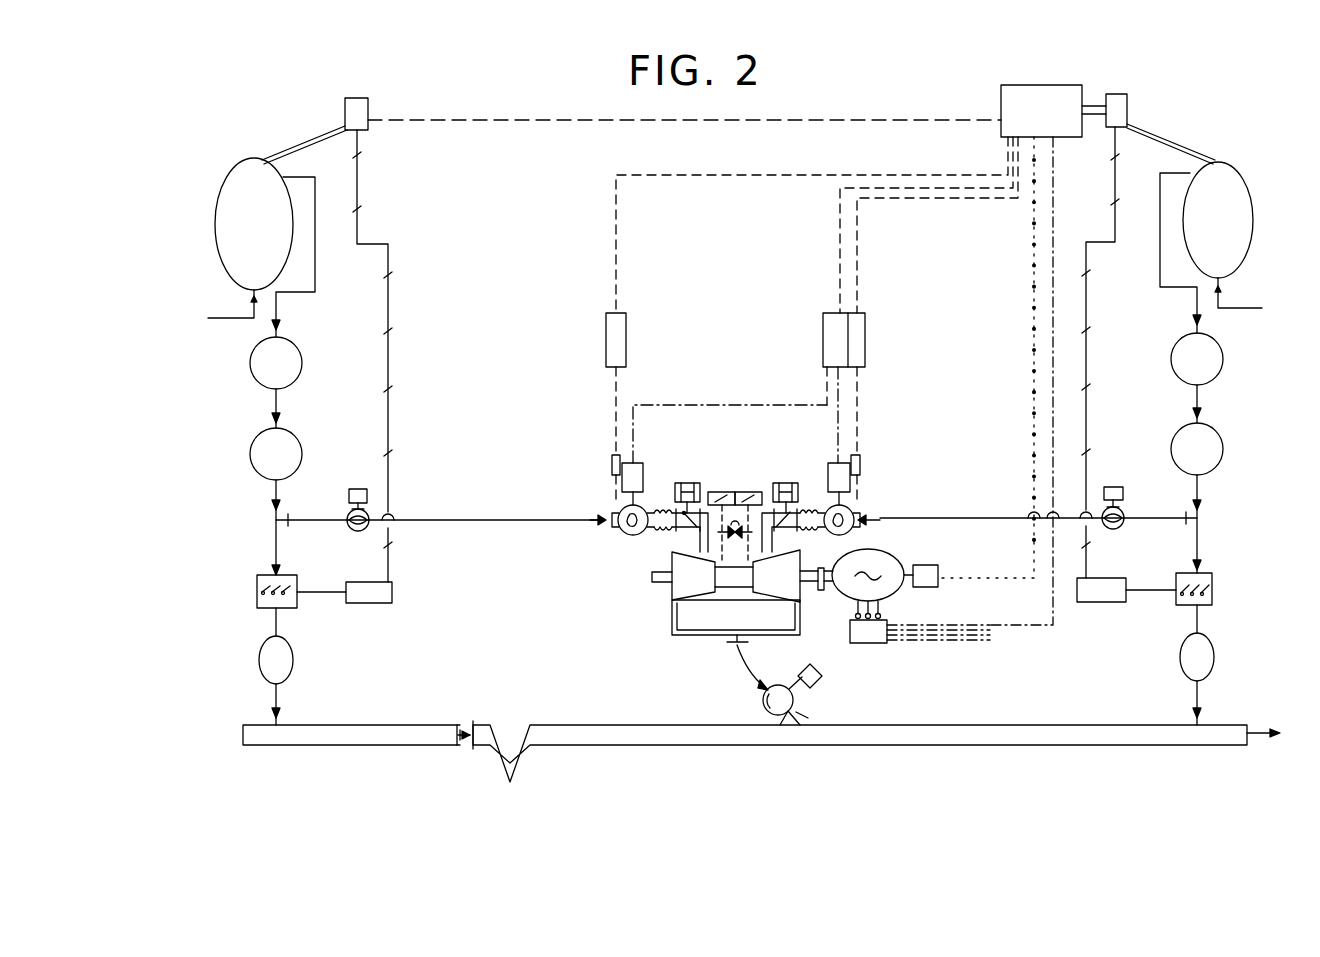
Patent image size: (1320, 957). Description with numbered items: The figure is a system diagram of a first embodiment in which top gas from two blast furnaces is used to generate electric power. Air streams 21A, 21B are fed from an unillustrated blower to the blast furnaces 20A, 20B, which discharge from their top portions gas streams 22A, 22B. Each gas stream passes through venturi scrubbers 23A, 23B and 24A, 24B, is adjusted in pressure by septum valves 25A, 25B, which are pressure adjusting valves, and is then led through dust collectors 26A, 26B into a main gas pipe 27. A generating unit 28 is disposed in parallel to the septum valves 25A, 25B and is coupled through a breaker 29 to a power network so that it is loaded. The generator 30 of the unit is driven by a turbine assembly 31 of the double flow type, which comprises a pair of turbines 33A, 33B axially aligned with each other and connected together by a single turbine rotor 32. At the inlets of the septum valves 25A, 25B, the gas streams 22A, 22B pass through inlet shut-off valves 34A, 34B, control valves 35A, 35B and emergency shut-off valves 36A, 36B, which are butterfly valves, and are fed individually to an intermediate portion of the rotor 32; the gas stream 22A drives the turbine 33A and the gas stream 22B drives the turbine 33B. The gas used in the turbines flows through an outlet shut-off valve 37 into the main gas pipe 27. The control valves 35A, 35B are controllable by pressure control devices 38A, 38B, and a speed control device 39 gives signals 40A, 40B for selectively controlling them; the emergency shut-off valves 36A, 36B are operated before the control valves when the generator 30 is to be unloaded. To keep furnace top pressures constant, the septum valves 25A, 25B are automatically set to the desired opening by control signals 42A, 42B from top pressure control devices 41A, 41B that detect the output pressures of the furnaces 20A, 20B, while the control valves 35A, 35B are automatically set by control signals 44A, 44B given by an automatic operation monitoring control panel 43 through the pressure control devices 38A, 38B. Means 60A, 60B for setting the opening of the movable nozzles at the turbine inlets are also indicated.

The blast furnace 20A is at (254, 224).
The blast furnace 20B is at (1218, 220).
The air stream 21A is at (213, 311).
The air stream 21B is at (1246, 293).
The gas stream 22A is at (303, 292).
The gas stream 22B is at (1160, 289).
The venturi scrubber 23A is at (282, 374).
The venturi scrubber 23B is at (1203, 370).
The venturi scrubber 24A is at (282, 465).
The venturi scrubber 24B is at (1203, 460).
The septum valve 25A is at (302, 588).
The septum valve 25B is at (1174, 584).
The dust collector 26A is at (286, 671).
The dust collector 26B is at (1207, 668).
The main gas pipe 27 is at (664, 745).
The generating unit 28 is at (902, 560).
The breaker 29 is at (868, 643).
The generator 30 is at (890, 590).
The turbine assembly 31 is at (698, 614).
The turbine rotor 32 is at (820, 592).
The turbine 33A is at (703, 588).
The turbine 33B is at (784, 588).
The inlet shut-off valve 34A is at (350, 509).
The inlet shut-off valve 34B is at (1122, 505).
The control valve 35A is at (616, 510).
The control valve 35B is at (856, 510).
The emergency shut-off valve 36A is at (682, 503).
The emergency shut-off valve 36B is at (790, 511).
The outlet shut-off valve 37 is at (796, 700).
The pressure control device 38A is at (622, 340).
The pressure control device 38B is at (865, 342).
The speed control device 39 is at (823, 338).
The signal 40A is at (720, 404).
The signal 40B is at (838, 423).
The top pressure control device 41A is at (368, 128).
The top pressure control device 41B is at (1127, 100).
The control signal 42A is at (388, 336).
The control signal 42B is at (1087, 360).
The automatic operation monitoring control panel 43 is at (1052, 122).
The control signal 44A is at (616, 402).
The control signal 44B is at (858, 412).
The nozzle opening setting means 60A is at (718, 490).
The nozzle opening setting means 60B is at (756, 490).